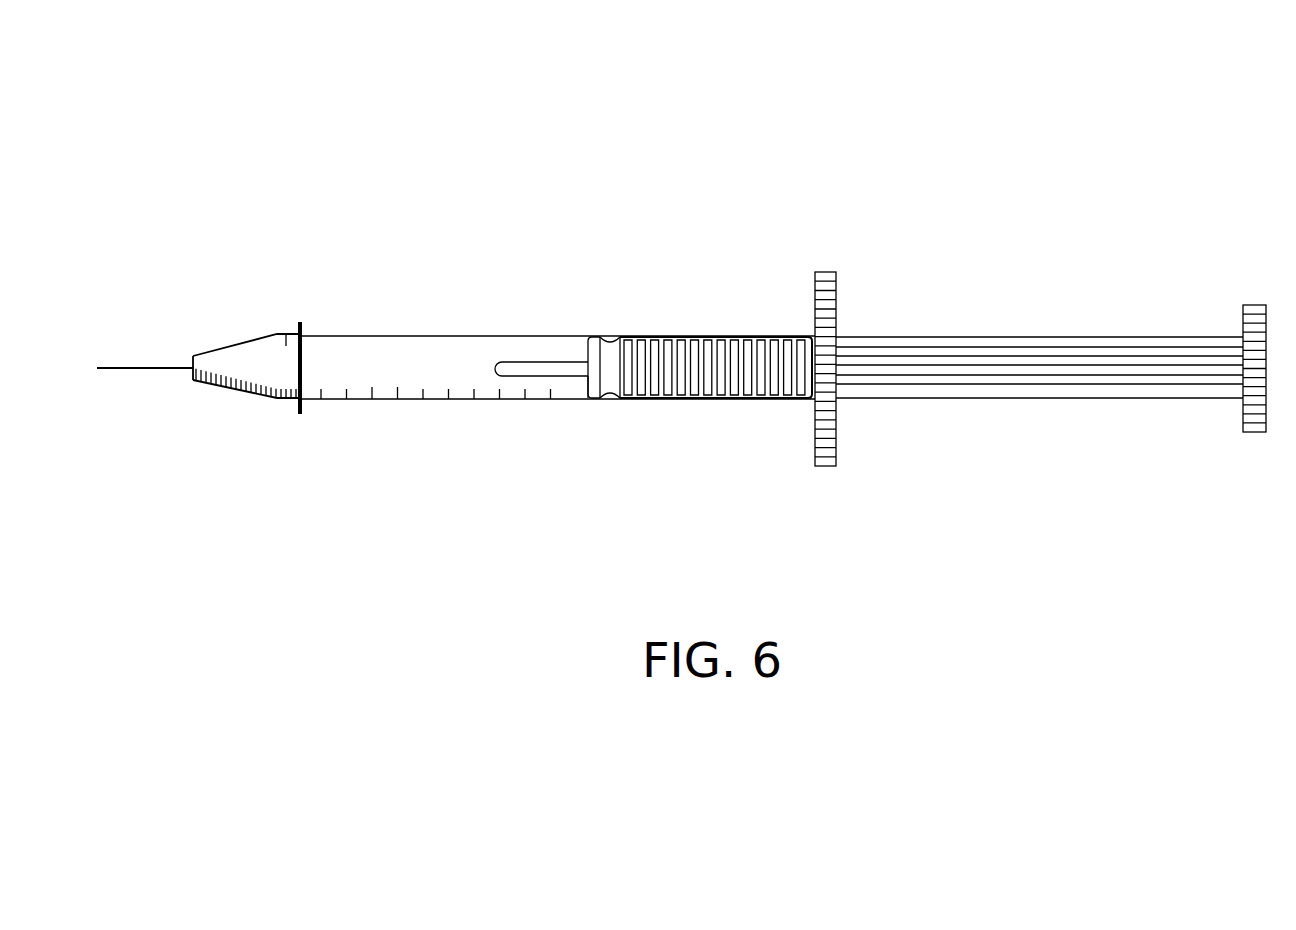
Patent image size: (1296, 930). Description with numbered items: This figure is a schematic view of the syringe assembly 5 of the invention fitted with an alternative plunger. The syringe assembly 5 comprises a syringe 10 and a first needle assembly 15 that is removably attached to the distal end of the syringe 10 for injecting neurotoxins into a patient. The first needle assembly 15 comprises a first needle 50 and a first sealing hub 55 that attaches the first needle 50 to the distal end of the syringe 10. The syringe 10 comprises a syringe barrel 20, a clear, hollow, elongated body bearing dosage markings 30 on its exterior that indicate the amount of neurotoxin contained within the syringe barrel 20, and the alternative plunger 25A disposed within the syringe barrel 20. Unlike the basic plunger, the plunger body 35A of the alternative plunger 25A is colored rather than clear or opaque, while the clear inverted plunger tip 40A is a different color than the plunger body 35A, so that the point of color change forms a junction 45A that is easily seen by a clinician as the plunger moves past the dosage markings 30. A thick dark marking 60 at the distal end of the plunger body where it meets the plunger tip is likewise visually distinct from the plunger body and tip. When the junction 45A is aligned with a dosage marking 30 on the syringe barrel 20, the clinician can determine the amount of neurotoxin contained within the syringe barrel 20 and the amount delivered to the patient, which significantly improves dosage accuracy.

The syringe assembly 5 is at (1146, 123).
The syringe 10 is at (1272, 240).
The first needle assembly 15 is at (181, 485).
The syringe barrel 20 is at (435, 335).
The alternative plunger 25A is at (752, 430).
The dosage markings 30 is at (396, 410).
The plunger body 35A is at (683, 373).
The clear inverted plunger tip 40A is at (533, 368).
The junction 45A is at (585, 365).
The first needle 50 is at (143, 368).
The first sealing hub 55 is at (257, 388).
The thick dark marking 60 is at (575, 390).